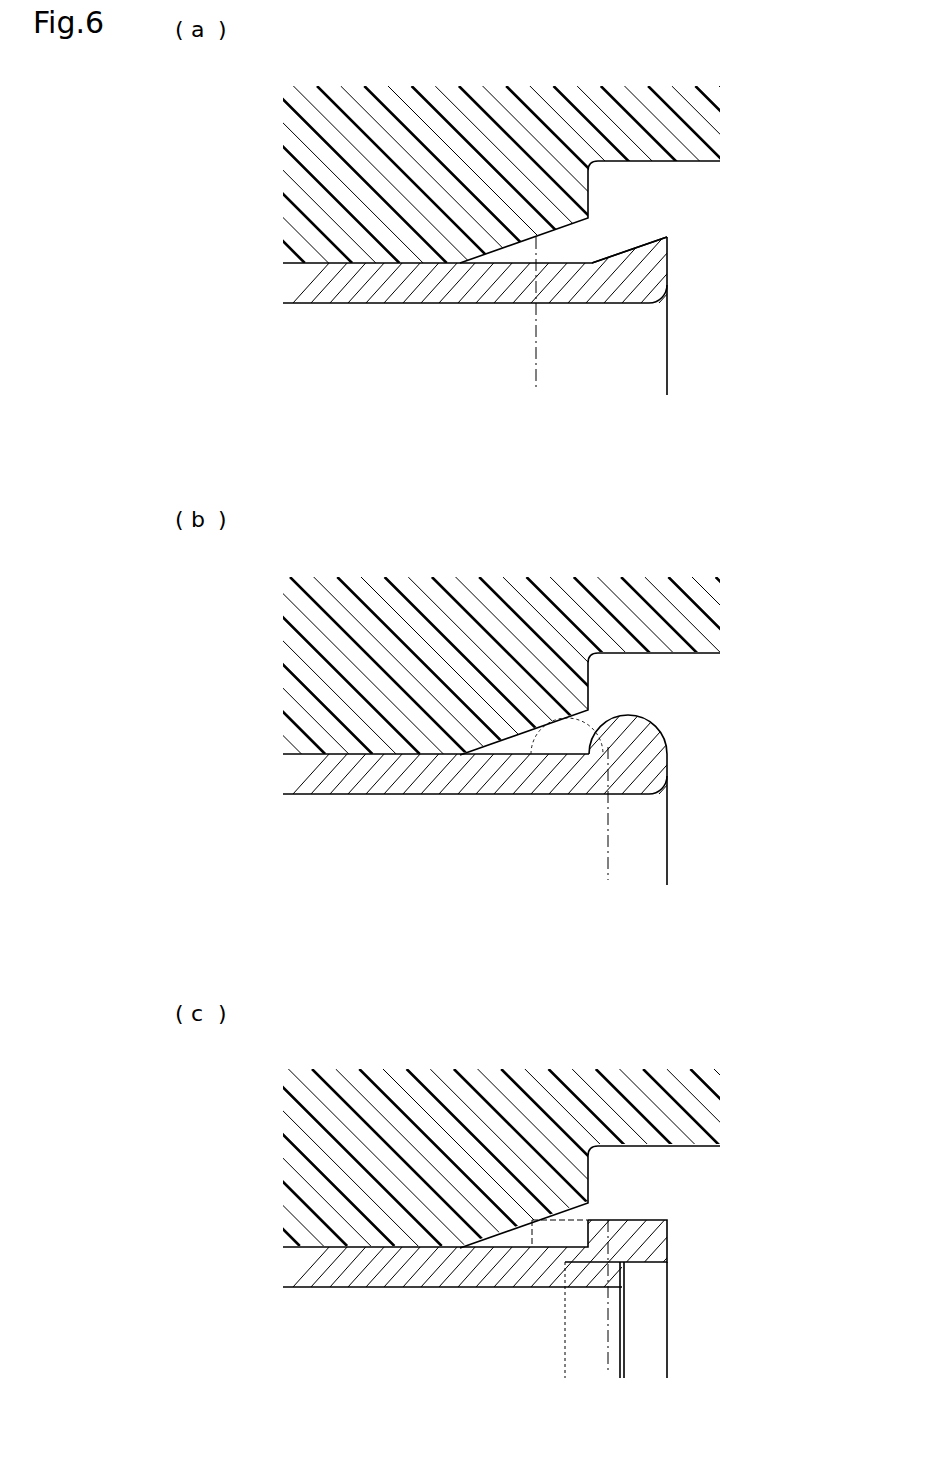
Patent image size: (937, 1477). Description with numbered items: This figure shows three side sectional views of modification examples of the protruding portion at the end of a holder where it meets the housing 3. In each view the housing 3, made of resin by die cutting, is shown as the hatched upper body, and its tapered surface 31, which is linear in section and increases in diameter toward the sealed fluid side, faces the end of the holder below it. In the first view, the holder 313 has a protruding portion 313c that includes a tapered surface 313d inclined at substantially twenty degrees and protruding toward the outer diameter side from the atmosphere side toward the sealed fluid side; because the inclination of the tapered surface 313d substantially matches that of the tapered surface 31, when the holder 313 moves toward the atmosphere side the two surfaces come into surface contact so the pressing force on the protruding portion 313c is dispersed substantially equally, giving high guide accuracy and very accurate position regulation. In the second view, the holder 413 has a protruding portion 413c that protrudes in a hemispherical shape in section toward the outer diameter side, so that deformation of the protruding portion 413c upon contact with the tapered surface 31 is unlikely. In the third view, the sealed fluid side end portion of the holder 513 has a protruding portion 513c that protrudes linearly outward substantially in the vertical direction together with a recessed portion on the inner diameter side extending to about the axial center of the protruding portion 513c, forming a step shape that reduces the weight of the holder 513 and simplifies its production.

The housing 3 is at (477, 122).
The tapered surface 31 is at (550, 235).
The holder 313 is at (668, 330).
The protruding portion 313c is at (667, 265).
The tapered surface 313d is at (628, 255).
The holder 413 is at (668, 823).
The protruding portion 413c is at (648, 753).
The holder 513 is at (668, 1315).
The protruding portion 513c is at (648, 1242).